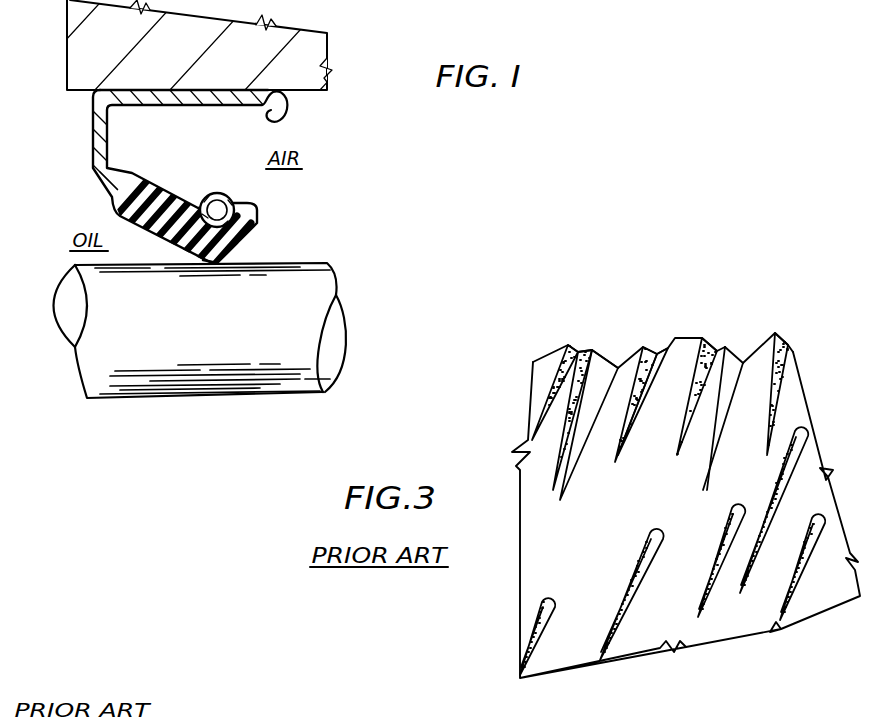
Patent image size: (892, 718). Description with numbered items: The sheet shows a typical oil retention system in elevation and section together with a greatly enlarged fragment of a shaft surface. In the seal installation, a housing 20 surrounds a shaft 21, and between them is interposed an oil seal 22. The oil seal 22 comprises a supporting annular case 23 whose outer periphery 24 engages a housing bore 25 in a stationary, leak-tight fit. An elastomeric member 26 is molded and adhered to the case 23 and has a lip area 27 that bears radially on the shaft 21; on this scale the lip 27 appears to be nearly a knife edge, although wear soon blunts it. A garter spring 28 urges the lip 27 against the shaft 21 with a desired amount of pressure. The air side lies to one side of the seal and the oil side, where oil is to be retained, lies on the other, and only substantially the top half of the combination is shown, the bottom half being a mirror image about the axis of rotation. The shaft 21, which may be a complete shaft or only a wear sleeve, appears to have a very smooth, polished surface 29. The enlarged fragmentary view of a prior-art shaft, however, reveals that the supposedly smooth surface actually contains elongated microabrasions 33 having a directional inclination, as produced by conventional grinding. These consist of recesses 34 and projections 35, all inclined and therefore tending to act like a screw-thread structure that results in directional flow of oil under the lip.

In FIG. 1, the housing 20 is at (308, 40).
In FIG. 1, the shaft 21 is at (318, 272).
In FIG. 1, the oil seal 22 is at (144, 180).
In FIG. 1, the supporting annular case 23 is at (188, 105).
In FIG. 1, the outer periphery 24 is at (203, 88).
In FIG. 1, the housing bore 25 is at (298, 91).
In FIG. 1, the elastomeric member 26 is at (188, 205).
In FIG. 1, the lip area 27 is at (246, 254).
In FIG. 1, the garter spring 28 is at (229, 196).
In FIG. 1, the polished surface 29 is at (199, 314).
In FIG. 3, the microabrasions 33 is at (693, 403).
In FIG. 3, the recesses 34 is at (739, 357).
In FIG. 3, the projections 35 is at (695, 338).